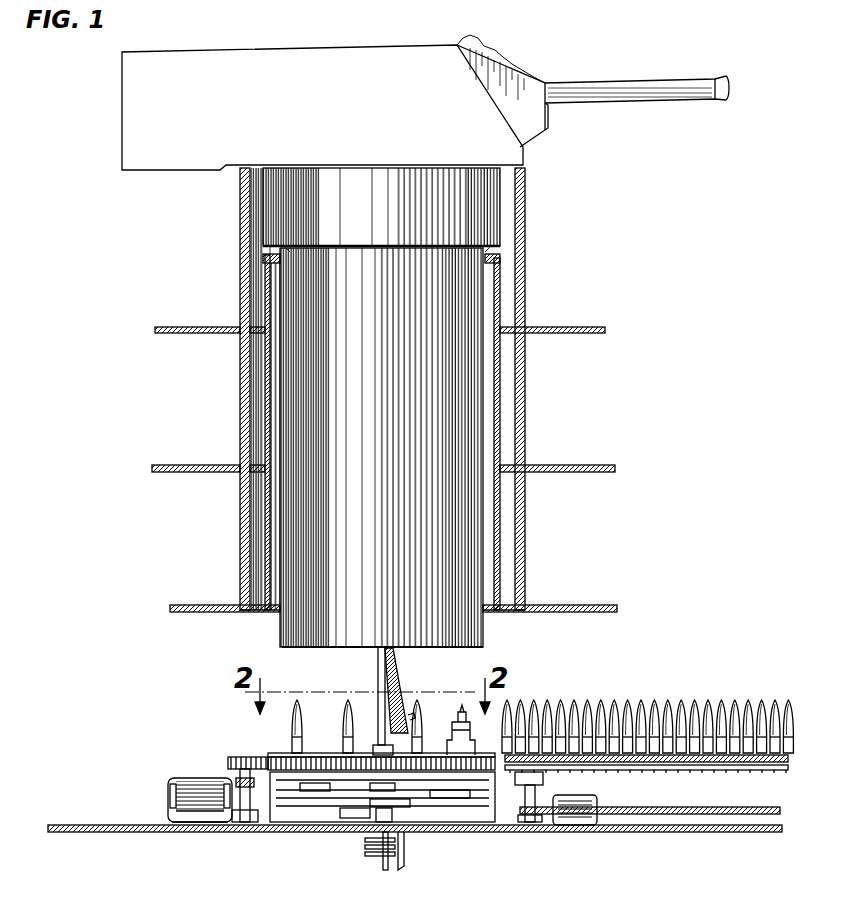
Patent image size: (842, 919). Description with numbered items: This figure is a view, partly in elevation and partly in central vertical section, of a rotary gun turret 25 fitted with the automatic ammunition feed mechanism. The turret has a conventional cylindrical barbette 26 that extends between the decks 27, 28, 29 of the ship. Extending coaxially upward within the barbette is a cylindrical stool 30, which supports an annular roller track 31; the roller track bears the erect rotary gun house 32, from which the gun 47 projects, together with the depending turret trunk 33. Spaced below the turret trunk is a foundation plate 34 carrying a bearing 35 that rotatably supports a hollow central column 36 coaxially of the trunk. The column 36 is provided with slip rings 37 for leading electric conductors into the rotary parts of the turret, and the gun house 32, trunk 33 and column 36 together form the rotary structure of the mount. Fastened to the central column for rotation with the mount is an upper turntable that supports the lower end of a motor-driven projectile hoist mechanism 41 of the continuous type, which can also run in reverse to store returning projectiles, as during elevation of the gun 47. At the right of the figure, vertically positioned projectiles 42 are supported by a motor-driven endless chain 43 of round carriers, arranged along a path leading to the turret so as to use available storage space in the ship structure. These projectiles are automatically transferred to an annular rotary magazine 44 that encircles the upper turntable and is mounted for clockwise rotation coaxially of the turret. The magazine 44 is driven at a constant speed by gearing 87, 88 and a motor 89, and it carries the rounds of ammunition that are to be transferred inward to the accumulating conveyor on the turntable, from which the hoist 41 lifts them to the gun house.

The rotary gun turret 25 is at (342, 199).
The cylindrical barbette 26 is at (244, 246).
The deck 27 is at (200, 326).
The deck 28 is at (190, 465).
The deck 29 is at (207, 605).
The cylindrical stool 30 is at (268, 518).
The annular roller track 31 is at (265, 258).
The rotary gun house 32 is at (142, 127).
The turret trunk 33 is at (344, 386).
The foundation plate 34 is at (148, 826).
The bearing 35 is at (350, 830).
The hollow central column 36 is at (380, 672).
The slip rings 37 is at (365, 850).
The projectile hoist mechanism 41 is at (398, 690).
The projectiles 42 is at (682, 710).
The motor-driven endless chain 43 is at (640, 770).
The annular rotary magazine 44 is at (285, 752).
The gun 47 is at (618, 90).
The gearing 87 is at (312, 756).
The gearing 88 is at (228, 760).
The motor 89 is at (190, 788).